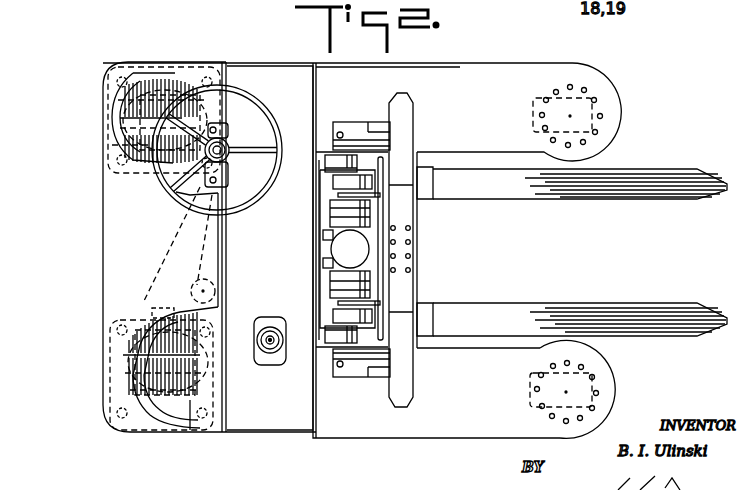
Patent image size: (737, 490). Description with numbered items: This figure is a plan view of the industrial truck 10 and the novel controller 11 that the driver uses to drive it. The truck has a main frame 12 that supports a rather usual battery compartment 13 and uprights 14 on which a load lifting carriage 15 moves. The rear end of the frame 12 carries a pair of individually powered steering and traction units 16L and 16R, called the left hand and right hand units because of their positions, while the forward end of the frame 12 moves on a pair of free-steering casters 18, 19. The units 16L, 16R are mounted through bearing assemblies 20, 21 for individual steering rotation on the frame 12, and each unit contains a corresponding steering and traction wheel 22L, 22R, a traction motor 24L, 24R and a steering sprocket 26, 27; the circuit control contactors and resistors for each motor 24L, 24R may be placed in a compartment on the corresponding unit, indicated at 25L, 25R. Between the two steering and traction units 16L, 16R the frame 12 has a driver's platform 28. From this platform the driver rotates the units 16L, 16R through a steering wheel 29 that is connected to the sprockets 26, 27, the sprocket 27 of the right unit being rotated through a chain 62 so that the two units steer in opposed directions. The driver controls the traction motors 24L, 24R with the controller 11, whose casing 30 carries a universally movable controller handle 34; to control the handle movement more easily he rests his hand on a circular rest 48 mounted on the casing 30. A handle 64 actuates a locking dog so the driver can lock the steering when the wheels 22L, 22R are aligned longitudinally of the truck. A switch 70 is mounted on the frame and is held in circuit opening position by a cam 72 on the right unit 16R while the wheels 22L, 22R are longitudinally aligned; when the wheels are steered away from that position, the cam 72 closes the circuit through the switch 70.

The industrial truck 10 is at (490, 63).
The controller 11 is at (303, 297).
The main frame 12 is at (363, 437).
The battery compartment 13 is at (258, 425).
The uprights 14 is at (347, 142).
The load lifting carriage 15 is at (443, 160).
The left hand steering and traction unit 16L is at (102, 118).
The right hand steering and traction unit 16R is at (100, 371).
The free-steering caster 18 is at (588, 100).
The free-steering caster 19 is at (597, 383).
The bearing assembly 20 is at (110, 147).
The bearing assembly 21 is at (110, 403).
The left steering and traction wheel 22L is at (113, 157).
The right steering and traction wheel 22R is at (118, 340).
The left traction motor 24L is at (178, 65).
The right traction motor 24R is at (120, 430).
The left contactor and resistor compartment 25L is at (147, 63).
The right contactor and resistor compartment 25R is at (143, 430).
The steering sprocket 26 is at (202, 65).
The steering sprocket 27 is at (168, 405).
The driver's platform 28 is at (118, 280).
The steering wheel 29 is at (270, 118).
The casing 30 is at (265, 363).
The controller handle 34 is at (265, 322).
The circular rest 48 is at (257, 358).
The chain 62 is at (232, 217).
The handle 64 is at (175, 193).
The switch 70 is at (218, 357).
The cam 72 is at (190, 430).